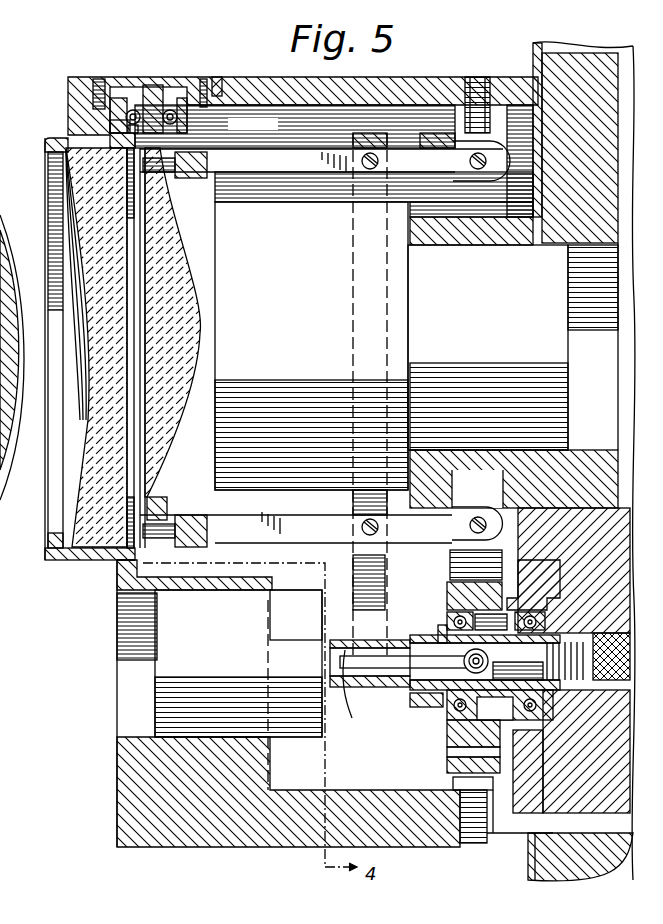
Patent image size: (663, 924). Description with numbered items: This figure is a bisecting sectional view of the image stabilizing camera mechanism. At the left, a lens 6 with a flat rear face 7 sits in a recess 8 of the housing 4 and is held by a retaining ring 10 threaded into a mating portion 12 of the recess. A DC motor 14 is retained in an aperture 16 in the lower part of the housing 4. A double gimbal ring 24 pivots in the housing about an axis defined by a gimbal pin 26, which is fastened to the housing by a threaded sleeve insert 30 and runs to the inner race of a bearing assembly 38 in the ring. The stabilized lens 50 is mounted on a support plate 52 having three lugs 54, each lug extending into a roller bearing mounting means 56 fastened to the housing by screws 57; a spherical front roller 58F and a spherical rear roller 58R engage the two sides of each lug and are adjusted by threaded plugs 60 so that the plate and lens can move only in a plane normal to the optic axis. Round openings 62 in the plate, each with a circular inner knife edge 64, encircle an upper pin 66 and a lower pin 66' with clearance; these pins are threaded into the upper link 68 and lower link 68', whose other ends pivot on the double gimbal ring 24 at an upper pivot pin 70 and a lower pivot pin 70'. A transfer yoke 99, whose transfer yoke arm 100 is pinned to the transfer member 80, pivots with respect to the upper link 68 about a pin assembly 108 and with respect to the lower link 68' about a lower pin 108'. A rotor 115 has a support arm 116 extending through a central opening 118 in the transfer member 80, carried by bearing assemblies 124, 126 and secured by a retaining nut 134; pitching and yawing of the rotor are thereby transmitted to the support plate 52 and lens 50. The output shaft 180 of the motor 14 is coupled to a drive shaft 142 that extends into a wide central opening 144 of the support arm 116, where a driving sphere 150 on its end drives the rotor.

The housing 4 is at (143, 77).
The lens 6 is at (85, 548).
The flat rear face 7 is at (127, 453).
The recess 8 is at (80, 550).
The retaining ring 10 is at (50, 160).
The mating portion 12 is at (45, 556).
The DC motor 14 is at (165, 665).
The aperture 16 is at (130, 688).
The double gimbal ring 24 is at (460, 245).
The gimbal pin 26 is at (470, 77).
The threaded sleeve insert 30 is at (493, 77).
The bearing assembly 38 is at (455, 137).
The stabilized lens 50 is at (216, 305).
The support plate 52 is at (214, 222).
The lug 54 is at (152, 97).
The roller bearing mounting means 56 is at (123, 87).
The screw 57 is at (97, 77).
The spherical front roller 58F is at (110, 123).
The spherical rear roller 58R is at (215, 125).
The adjustably threaded plug 60 is at (112, 127).
The round opening 62 is at (212, 205).
The circular inner knife edge 64 is at (213, 212).
The upper pin 66 is at (200, 165).
The lower pin 66' is at (174, 585).
The upper link 68 is at (325, 161).
The lower link 68' is at (321, 525).
The upper pivot pin 70 is at (374, 208).
The lower pivot pin 70' is at (461, 561).
The transfer member 80 is at (452, 742).
The transfer yoke 99 is at (353, 185).
The transfer yoke arm 100 is at (455, 588).
The pin assembly 108 is at (424, 162).
The lower pin 108' is at (424, 511).
The rotor 115 is at (583, 523).
The support arm 116 is at (455, 616).
The central opening 118 is at (462, 582).
The bearing assembly 124 is at (450, 712).
The bearing assembly 126 is at (540, 815).
The retaining nut 134 is at (410, 694).
The drive shaft 142 is at (372, 648).
The central opening 144 is at (426, 627).
The driving sphere 150 is at (492, 660).
The output shaft 180 is at (361, 686).